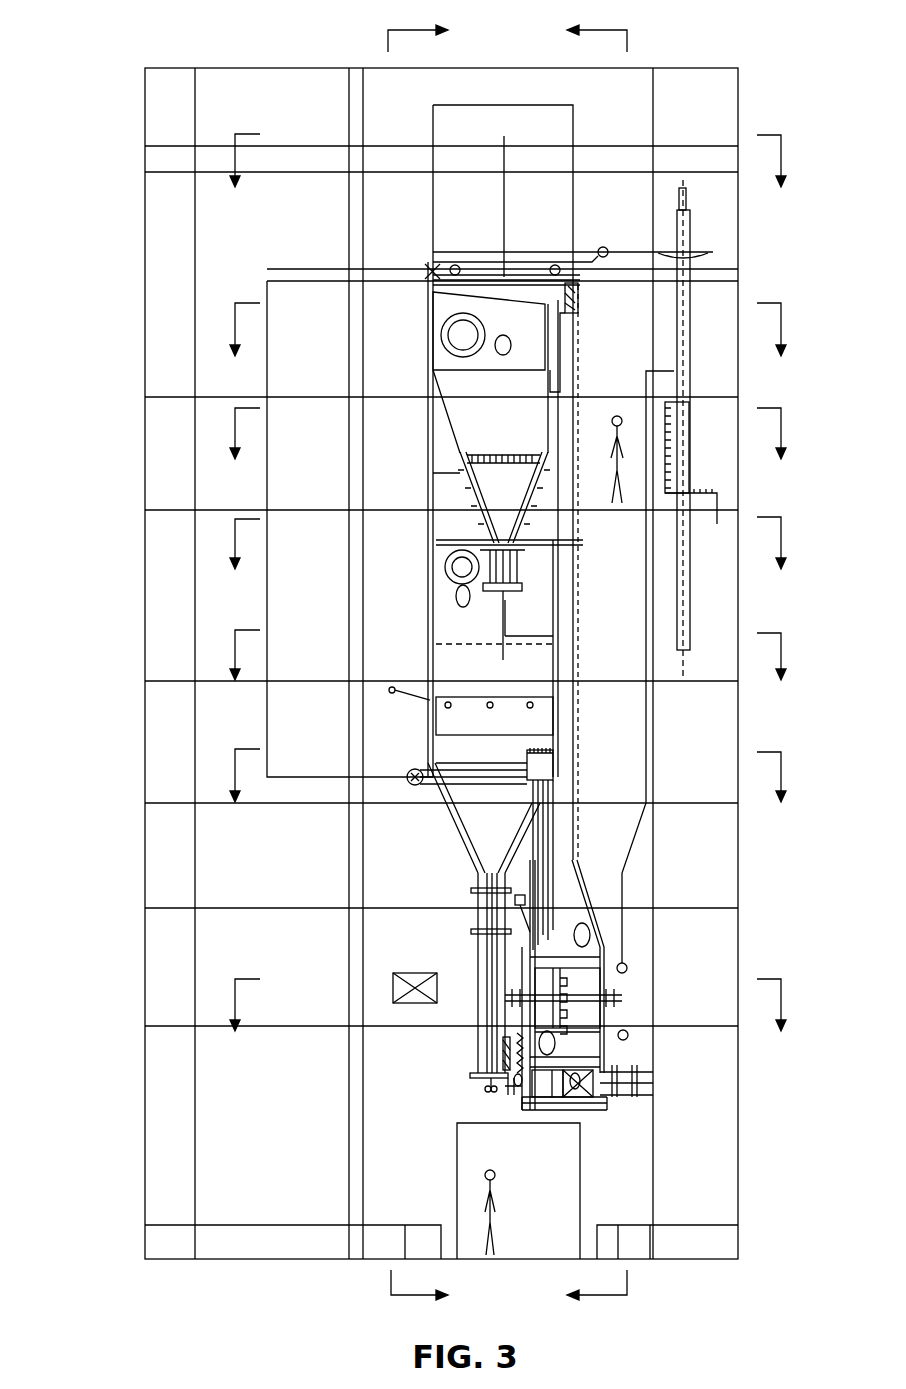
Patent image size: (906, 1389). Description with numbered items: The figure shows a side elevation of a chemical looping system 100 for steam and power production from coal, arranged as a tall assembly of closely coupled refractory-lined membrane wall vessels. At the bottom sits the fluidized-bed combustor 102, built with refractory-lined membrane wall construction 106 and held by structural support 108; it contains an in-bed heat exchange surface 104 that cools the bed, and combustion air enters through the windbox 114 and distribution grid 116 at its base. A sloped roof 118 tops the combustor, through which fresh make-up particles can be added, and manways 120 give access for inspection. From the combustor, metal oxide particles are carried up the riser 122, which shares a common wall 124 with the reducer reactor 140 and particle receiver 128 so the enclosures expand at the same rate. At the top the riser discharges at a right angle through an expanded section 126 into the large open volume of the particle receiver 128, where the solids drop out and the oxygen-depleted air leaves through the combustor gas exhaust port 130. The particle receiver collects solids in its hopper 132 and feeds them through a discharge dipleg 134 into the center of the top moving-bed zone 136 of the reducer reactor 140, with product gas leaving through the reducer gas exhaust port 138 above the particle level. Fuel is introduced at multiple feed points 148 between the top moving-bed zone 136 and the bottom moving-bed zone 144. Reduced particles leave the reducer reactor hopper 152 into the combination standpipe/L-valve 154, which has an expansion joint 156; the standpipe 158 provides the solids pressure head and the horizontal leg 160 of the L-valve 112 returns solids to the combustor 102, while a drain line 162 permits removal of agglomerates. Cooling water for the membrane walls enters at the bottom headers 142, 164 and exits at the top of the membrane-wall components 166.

The system 100 is at (128, 38).
The combustor 102 is at (600, 945).
The in-bed heat exchange surface 104 is at (592, 988).
The refractory-lined membrane wall construction 106 is at (600, 1045).
The structural support 108 is at (612, 1000).
The L-valve 112 is at (505, 1080).
The windbox 114 is at (552, 1100).
The distribution grid 116 is at (605, 1108).
The sloped roof 118 is at (480, 897).
The manways 120 is at (600, 940).
The riser 122 is at (573, 662).
The wall 124 is at (558, 600).
The expanded section 126 is at (560, 380).
The particle receiver 128 is at (500, 437).
The combustor gas exhaust port 130 is at (463, 335).
The hopper 132 is at (470, 505).
The discharge dipleg 134 is at (490, 572).
The top moving-bed zone 136 is at (553, 634).
The reducer gas exhaust port 138 is at (462, 562).
The reducer reactor 140 is at (428, 618).
The headers 142 is at (495, 790).
The bottom moving-bed zone 144 is at (488, 758).
The feed points 148 is at (467, 690).
The reducer reactor hopper 152 is at (488, 822).
The standpipe/L-valve 154 is at (490, 1030).
The expansion joint 156 is at (490, 923).
The standpipe 158 is at (478, 970).
The horizontal leg 160 is at (478, 1060).
The drain line 162 is at (480, 1088).
The bottom headers 164 is at (567, 1110).
The top of the membrane-wall components 166 is at (435, 284).